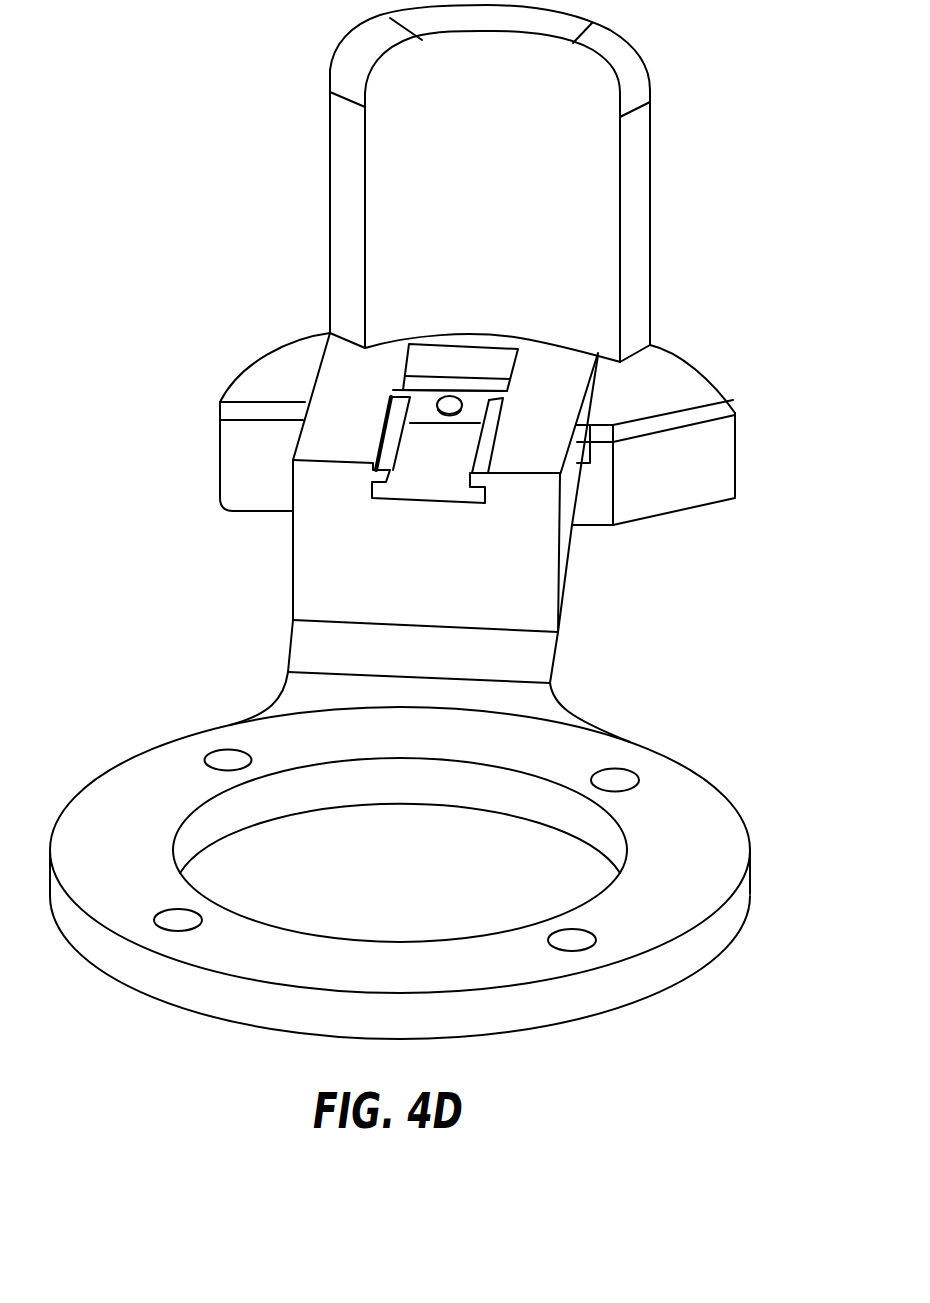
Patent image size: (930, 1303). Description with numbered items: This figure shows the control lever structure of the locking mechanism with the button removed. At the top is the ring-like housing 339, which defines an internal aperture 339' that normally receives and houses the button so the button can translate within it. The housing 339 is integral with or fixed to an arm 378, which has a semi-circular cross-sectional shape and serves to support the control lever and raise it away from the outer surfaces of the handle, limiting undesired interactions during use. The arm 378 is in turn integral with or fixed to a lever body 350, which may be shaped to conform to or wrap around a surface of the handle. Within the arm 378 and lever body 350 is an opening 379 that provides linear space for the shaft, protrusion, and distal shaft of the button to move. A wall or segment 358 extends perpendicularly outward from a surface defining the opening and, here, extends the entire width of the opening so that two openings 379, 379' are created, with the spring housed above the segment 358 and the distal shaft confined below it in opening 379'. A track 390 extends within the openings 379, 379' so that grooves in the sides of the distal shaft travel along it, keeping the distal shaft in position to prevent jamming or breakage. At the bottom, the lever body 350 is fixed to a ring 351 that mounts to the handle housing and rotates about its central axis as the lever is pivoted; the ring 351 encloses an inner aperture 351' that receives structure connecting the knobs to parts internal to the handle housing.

The housing 339 is at (437, 183).
The internal aperture 339' is at (446, 196).
The arm 378 is at (665, 393).
The lever body 350 is at (430, 537).
The opening 379 is at (418, 383).
The opening 379' is at (426, 510).
The track 390 is at (383, 448).
The segment 358 is at (478, 411).
The ring 351 is at (404, 864).
The inner aperture 351' is at (433, 850).